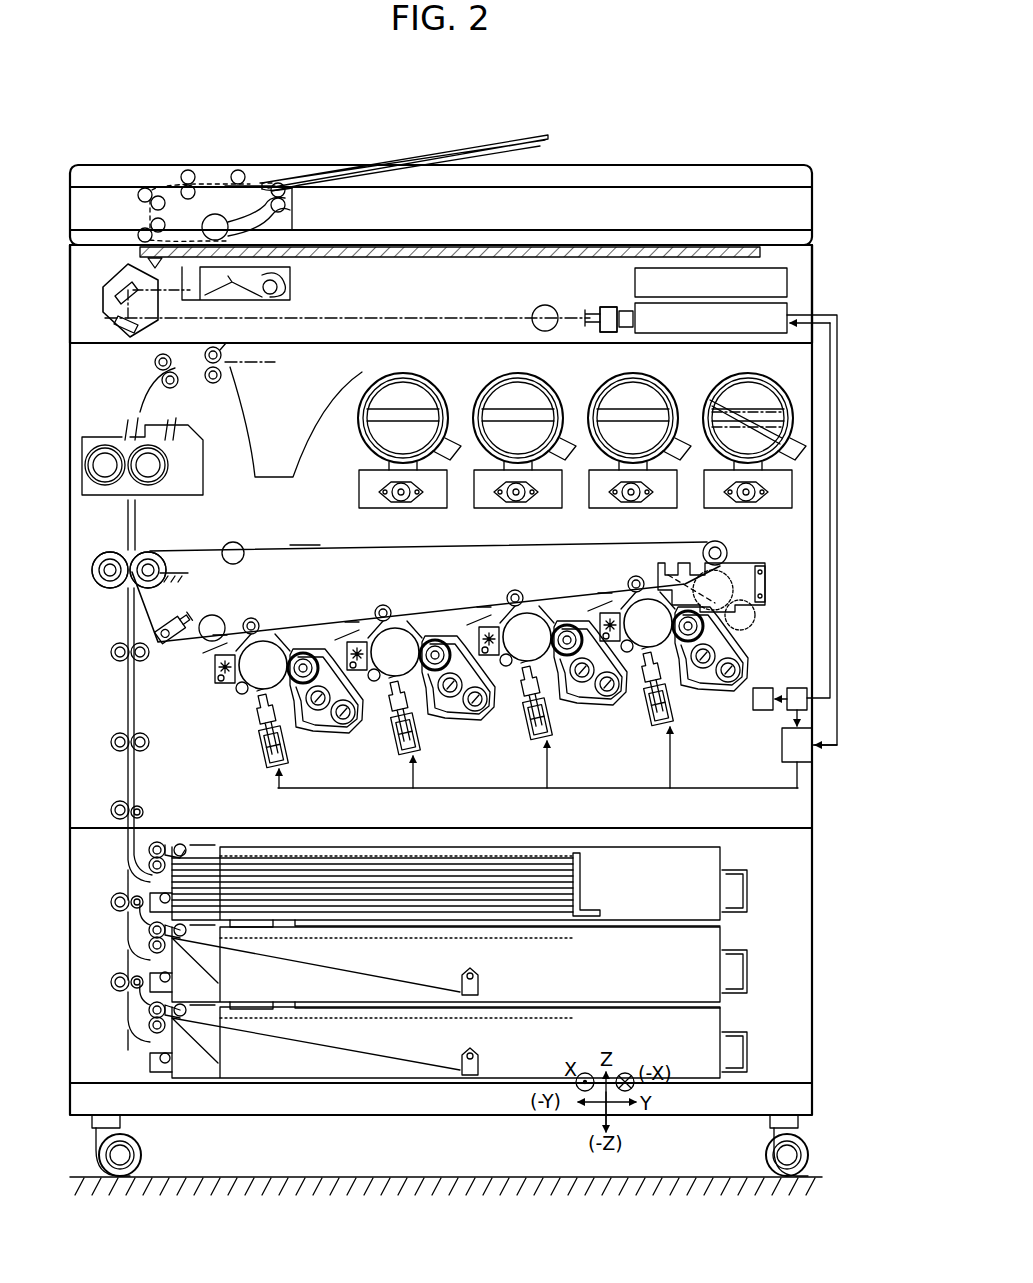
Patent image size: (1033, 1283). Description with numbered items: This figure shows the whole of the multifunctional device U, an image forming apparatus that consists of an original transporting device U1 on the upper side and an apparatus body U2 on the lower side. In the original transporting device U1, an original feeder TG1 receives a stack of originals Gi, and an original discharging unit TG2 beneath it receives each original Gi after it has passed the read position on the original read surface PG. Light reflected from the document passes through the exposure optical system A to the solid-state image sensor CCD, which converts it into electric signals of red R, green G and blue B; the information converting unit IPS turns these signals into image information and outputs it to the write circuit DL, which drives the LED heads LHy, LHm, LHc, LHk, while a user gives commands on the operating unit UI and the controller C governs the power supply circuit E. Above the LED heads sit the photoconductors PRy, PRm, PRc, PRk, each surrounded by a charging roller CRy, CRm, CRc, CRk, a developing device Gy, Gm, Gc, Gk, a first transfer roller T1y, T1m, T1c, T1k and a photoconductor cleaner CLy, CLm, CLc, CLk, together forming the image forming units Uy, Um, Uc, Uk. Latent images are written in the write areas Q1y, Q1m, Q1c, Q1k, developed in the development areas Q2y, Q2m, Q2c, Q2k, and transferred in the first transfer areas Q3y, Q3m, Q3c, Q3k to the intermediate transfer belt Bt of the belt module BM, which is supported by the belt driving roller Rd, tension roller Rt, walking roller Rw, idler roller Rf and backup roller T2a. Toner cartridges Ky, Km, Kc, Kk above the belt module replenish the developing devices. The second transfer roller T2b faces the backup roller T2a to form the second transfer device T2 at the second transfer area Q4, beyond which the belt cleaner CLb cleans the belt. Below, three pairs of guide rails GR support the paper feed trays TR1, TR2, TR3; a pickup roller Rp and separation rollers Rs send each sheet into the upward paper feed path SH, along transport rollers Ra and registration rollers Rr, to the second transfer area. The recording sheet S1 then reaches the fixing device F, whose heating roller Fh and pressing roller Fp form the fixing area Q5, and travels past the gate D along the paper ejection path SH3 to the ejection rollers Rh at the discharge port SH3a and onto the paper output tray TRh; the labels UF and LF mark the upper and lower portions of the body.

The multifunctional device U is at (812, 205).
The original transporting device U1 is at (698, 162).
The apparatus body U2 is at (778, 243).
The original Gi is at (356, 158).
The original feeder TG1 is at (538, 142).
The original discharging unit TG2 is at (460, 236).
The original read surface PG is at (474, 256).
The exposure optical system A is at (100, 298).
The blue B is at (608, 332).
The solid-state image sensor CCD is at (603, 306).
The red R is at (604, 306).
The green G is at (628, 310).
The operating unit UI is at (700, 293).
The information converting unit IPS is at (694, 329).
The controller C is at (797, 707).
The power supply circuit E is at (770, 699).
The write circuit DL is at (785, 756).
The K-color toner cartridge Kk is at (391, 410).
The C-color toner cartridge Kc is at (506, 410).
The M-color toner cartridge Km is at (620, 410).
The Y-color toner cartridge Ky is at (736, 410).
The paper output tray TRh is at (342, 405).
The paper ejection path SH3 is at (140, 392).
The ejection rollers Rh is at (216, 384).
The discharge port SH3a is at (240, 375).
The fixing device F is at (183, 496).
The heating roller Fh is at (166, 470).
The pressing roller Fp is at (104, 455).
The switching gate D is at (144, 426).
The fixing area Q5 is at (135, 488).
The second transfer roller T2b is at (104, 553).
The backup roller T2a is at (148, 552).
The second transfer device T2 is at (97, 588).
The second transfer area Q4 is at (128, 592).
The intermediate transfer belt Bt is at (340, 551).
The belt module BM is at (302, 530).
The walking roller Rw is at (245, 555).
The tension roller Rt is at (168, 620).
The idler roller Rf is at (210, 615).
The registration rollers Rr is at (115, 660).
The transport rollers Ra is at (116, 750).
The belt driving roller Rd is at (728, 551).
The belt cleaner CLb is at (672, 562).
The K-color photoconductor PRk is at (263, 665).
The C-color photoconductor PRc is at (395, 652).
The M-color photoconductor PRm is at (527, 637).
The Y-color photoconductor PRy is at (648, 623).
The K-color first transfer roller T1k is at (239, 610).
The C-color first transfer roller T1c is at (381, 601).
The M-color first transfer roller T1m is at (513, 581).
The Y-color first transfer roller T1y is at (633, 573).
The K-color development area Q2k is at (273, 622).
The C-color development area Q2c is at (410, 612).
The M-color development area Q2m is at (539, 601).
The Y-color development area Q2y is at (701, 623).
The K-color first transfer area Q3k is at (204, 650).
The C-color first transfer area Q3c is at (340, 615).
The M-color first transfer area Q3m is at (472, 611).
The Y-color first transfer area Q3y is at (605, 602).
The K-color photoconductor cleaner CLk is at (206, 674).
The C-color photoconductor cleaner CLc is at (342, 641).
The M-color photoconductor cleaner CLm is at (471, 635).
The Y-color photoconductor cleaner CLy is at (597, 627).
The K-color charging roller CRk is at (220, 696).
The C-color charging roller CRc is at (371, 713).
The M-color charging roller CRm is at (507, 703).
The Y-color charging roller CRy is at (632, 692).
The K-color write area Q1k is at (237, 710).
The C-color write area Q1c is at (426, 727).
The M-color write area Q1m is at (564, 716).
The Y-color write area Q1y is at (682, 698).
The K-color LED head LHk is at (255, 740).
The C-color LED head LHc is at (395, 734).
The M-color LED head LHm is at (526, 726).
The Y-color LED head LHy is at (649, 719).
The K-color developing device Gk is at (325, 705).
The C-color developing device Gc is at (457, 694).
The M-color developing device Gm is at (589, 683).
The Y-color developing device Gy is at (710, 670).
The K-color image forming unit Uk is at (261, 597).
The C-color image forming unit Uc is at (397, 585).
The M-color image forming unit Um is at (522, 579).
The Y-color image forming unit Uy is at (592, 572).
The recording sheet S1 is at (320, 856).
The upper frame UF is at (810, 823).
The lower frame LF is at (806, 861).
The paper feed tray TR1 is at (672, 898).
The paper feed tray TR2 is at (398, 968).
The paper feed tray TR3 is at (398, 1046).
The guide rails GR is at (748, 950).
The separation rollers Rs is at (146, 862).
The pickup roller Rp is at (184, 845).
The paper feed path SH is at (128, 1022).